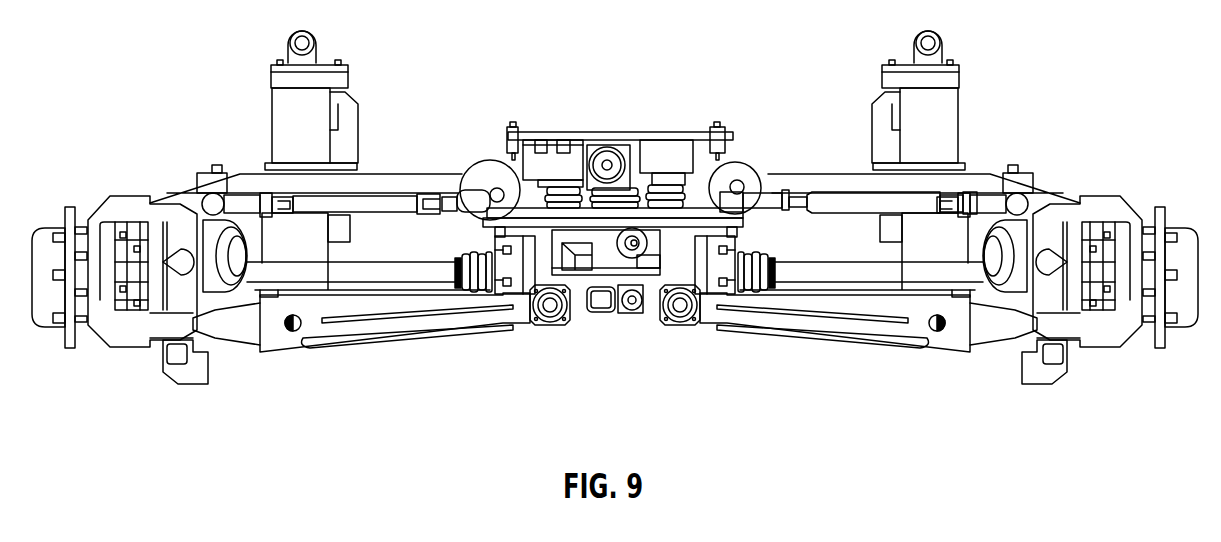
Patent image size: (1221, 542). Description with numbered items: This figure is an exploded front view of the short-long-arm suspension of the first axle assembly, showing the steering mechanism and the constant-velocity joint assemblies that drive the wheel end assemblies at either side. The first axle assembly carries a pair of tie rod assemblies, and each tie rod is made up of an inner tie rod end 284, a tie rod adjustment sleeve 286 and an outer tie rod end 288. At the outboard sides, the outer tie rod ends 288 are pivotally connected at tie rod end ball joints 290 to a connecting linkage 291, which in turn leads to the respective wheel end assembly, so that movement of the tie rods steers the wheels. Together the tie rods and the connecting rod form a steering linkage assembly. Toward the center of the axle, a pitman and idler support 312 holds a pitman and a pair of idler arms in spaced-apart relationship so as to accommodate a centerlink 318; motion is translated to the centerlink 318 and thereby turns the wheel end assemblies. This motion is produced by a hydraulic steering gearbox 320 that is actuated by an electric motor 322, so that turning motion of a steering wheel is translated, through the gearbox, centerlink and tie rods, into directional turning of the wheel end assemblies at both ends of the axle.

The inner tie rod end 284 is at (465, 191).
The tie rod adjustment sleeve 286 is at (830, 197).
The outer tie rod end 288 is at (244, 180).
The tie rod end ball joint 290 is at (1013, 198).
The connecting linkage 291 is at (175, 187).
The pitman and idler support 312 is at (618, 203).
The centerlink 318 is at (688, 290).
The hydraulic steering gearbox 320 is at (595, 277).
The electric motor 322 is at (623, 316).